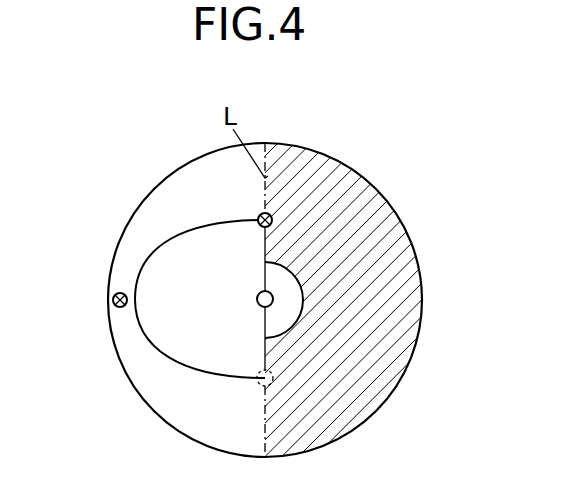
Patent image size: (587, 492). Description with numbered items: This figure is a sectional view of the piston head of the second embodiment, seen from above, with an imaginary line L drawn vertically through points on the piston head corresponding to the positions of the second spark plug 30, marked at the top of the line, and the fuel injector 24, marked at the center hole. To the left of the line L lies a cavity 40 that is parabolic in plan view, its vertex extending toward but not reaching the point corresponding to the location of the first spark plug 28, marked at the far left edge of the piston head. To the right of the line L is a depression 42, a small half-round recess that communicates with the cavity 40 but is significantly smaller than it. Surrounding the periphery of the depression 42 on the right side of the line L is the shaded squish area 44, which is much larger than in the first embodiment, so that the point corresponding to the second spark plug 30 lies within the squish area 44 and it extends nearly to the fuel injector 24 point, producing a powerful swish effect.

The fuel injector 24 is at (258, 291).
The first spark plug 28 is at (112, 293).
The second spark plug 30 is at (272, 214).
The cavity 40 is at (183, 248).
The depression 42 is at (288, 287).
The squish area 44 is at (373, 240).